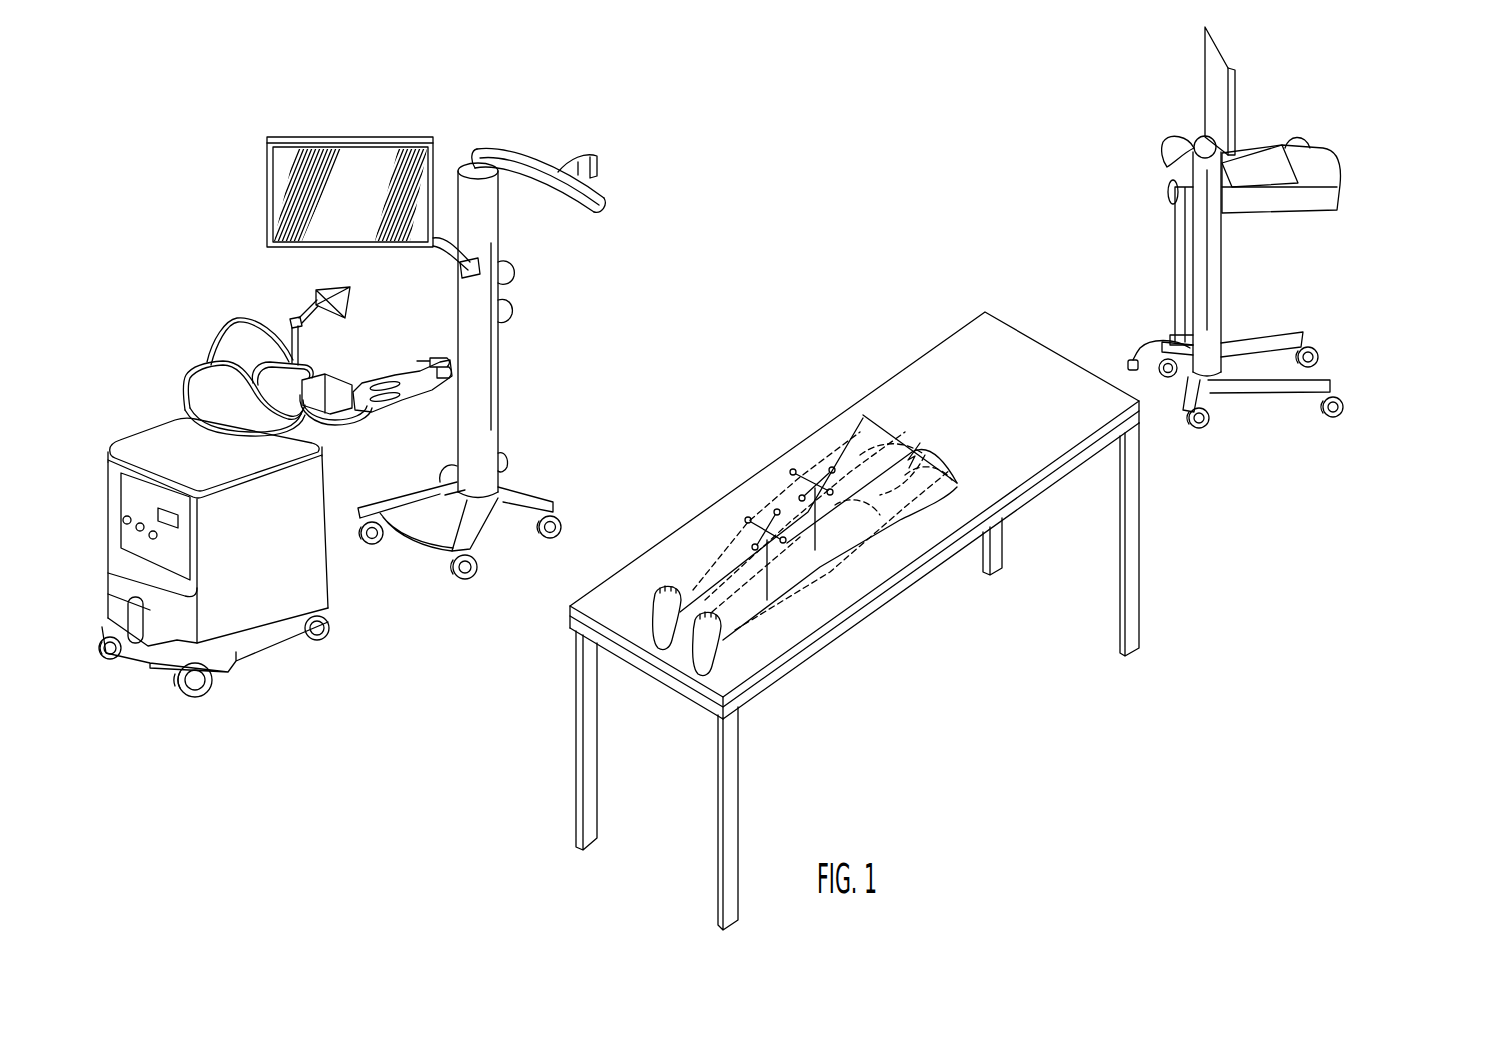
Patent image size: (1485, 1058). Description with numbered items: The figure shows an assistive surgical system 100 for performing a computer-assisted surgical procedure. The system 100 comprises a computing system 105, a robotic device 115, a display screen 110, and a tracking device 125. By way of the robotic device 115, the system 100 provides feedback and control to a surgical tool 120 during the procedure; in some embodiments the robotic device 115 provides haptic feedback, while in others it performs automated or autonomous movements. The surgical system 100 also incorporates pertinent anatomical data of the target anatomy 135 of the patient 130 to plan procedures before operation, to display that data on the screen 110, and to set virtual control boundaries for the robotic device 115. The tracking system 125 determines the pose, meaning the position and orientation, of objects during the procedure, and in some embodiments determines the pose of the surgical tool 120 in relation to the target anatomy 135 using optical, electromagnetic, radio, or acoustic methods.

The assistive surgical system 100 is at (1403, 110).
The computing system 105 is at (1335, 130).
The display screen 110 is at (1228, 52).
The robotic device 115 is at (166, 354).
The surgical tool 120 is at (433, 357).
The tracking device 125 is at (513, 108).
The patient 130 is at (833, 342).
The target anatomy 135 is at (748, 517).